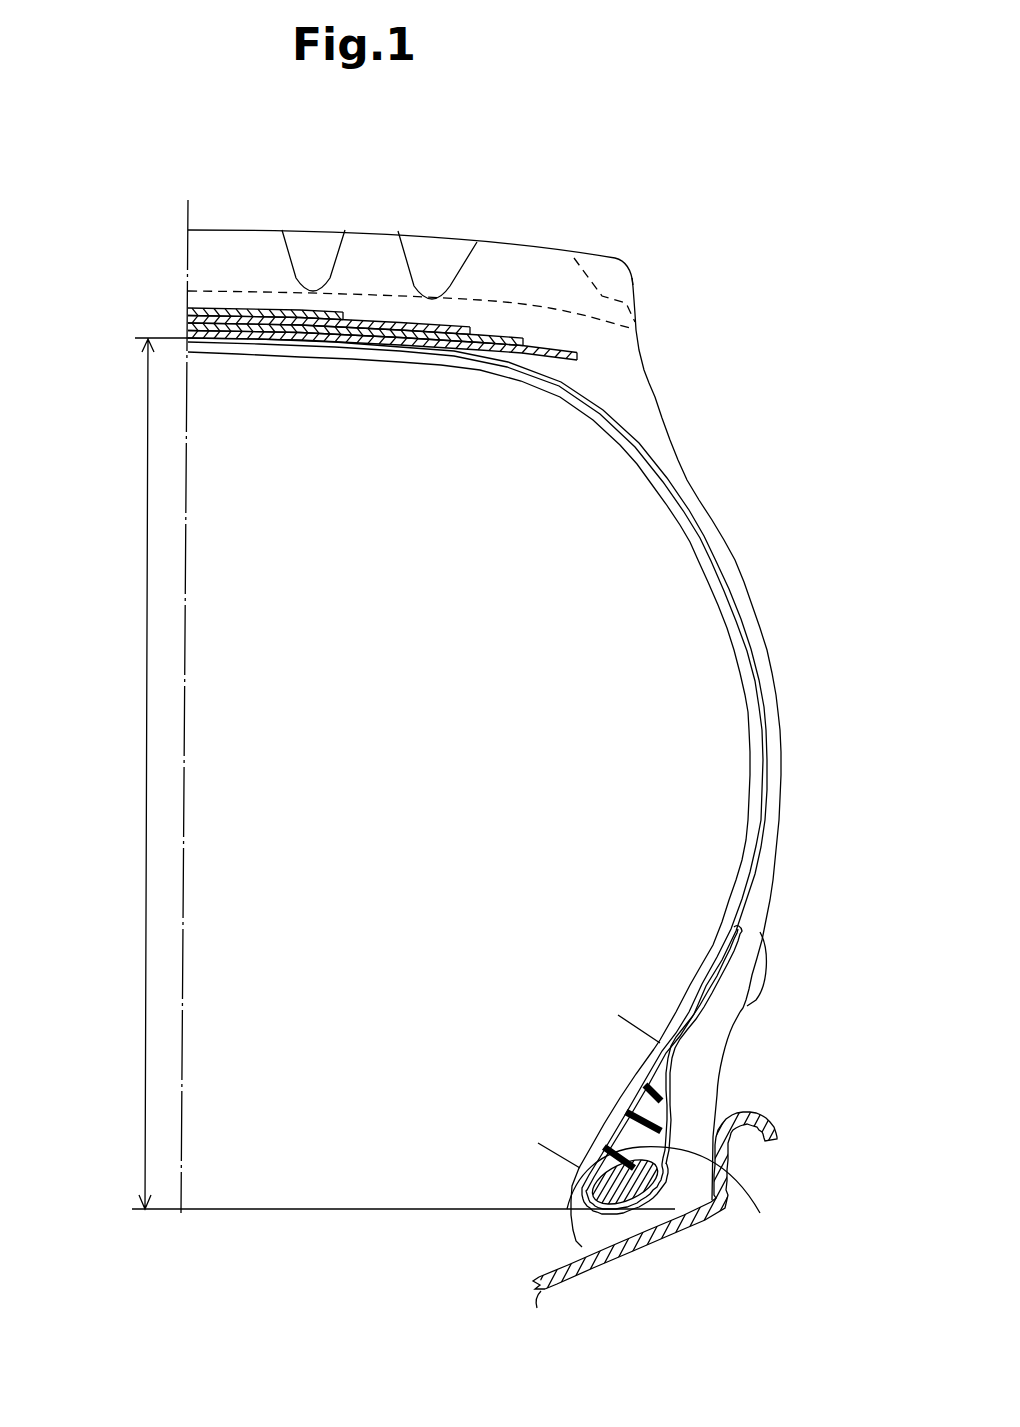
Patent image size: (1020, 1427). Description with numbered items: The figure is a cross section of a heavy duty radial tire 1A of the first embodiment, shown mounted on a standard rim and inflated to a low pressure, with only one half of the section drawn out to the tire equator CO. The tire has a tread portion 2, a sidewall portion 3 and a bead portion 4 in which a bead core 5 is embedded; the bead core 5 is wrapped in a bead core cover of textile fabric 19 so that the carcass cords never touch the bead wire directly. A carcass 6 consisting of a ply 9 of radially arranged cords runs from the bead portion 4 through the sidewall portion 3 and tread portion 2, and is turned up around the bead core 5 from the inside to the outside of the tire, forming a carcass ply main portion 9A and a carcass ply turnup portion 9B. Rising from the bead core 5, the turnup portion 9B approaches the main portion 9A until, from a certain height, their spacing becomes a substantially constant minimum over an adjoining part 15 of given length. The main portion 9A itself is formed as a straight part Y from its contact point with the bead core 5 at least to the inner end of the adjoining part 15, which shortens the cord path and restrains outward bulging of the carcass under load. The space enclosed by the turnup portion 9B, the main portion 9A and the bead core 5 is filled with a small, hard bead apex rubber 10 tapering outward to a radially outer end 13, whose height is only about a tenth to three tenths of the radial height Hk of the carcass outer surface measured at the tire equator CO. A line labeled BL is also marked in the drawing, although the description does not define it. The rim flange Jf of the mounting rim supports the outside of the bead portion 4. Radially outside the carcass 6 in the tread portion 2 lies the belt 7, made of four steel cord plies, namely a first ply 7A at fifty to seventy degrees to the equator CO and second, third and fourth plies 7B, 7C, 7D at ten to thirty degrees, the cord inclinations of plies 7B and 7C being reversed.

The heavy duty radial tire 1A is at (692, 315).
The tread portion 2 is at (373, 247).
The sidewall portion 3 is at (814, 593).
The bead portion 4 is at (519, 1163).
The bead core 5 is at (627, 1190).
The carcass 6 is at (676, 487).
The carcass ply 9 is at (625, 1184).
The carcass ply main portion 9A is at (716, 560).
The carcass ply turnup portion 9B is at (735, 950).
The belt 7 is at (75, 204).
The first belt ply 7A is at (188, 335).
The second belt ply 7B is at (188, 327).
The third belt ply 7C is at (188, 319).
The fourth belt ply 7D is at (188, 311).
The bead apex rubber 10 is at (640, 1117).
The radially outer end of bead apex 13 is at (685, 1068).
The adjoining part 15 is at (741, 1011).
The textile fabric 19 is at (677, 1191).
The rim flange Jf is at (768, 1117).
The tire equator CO is at (184, 446).
The radial height of carcass outer surface Hk is at (147, 833).
The bead base line BL is at (298, 1212).
The straight part Y is at (520, 1130).